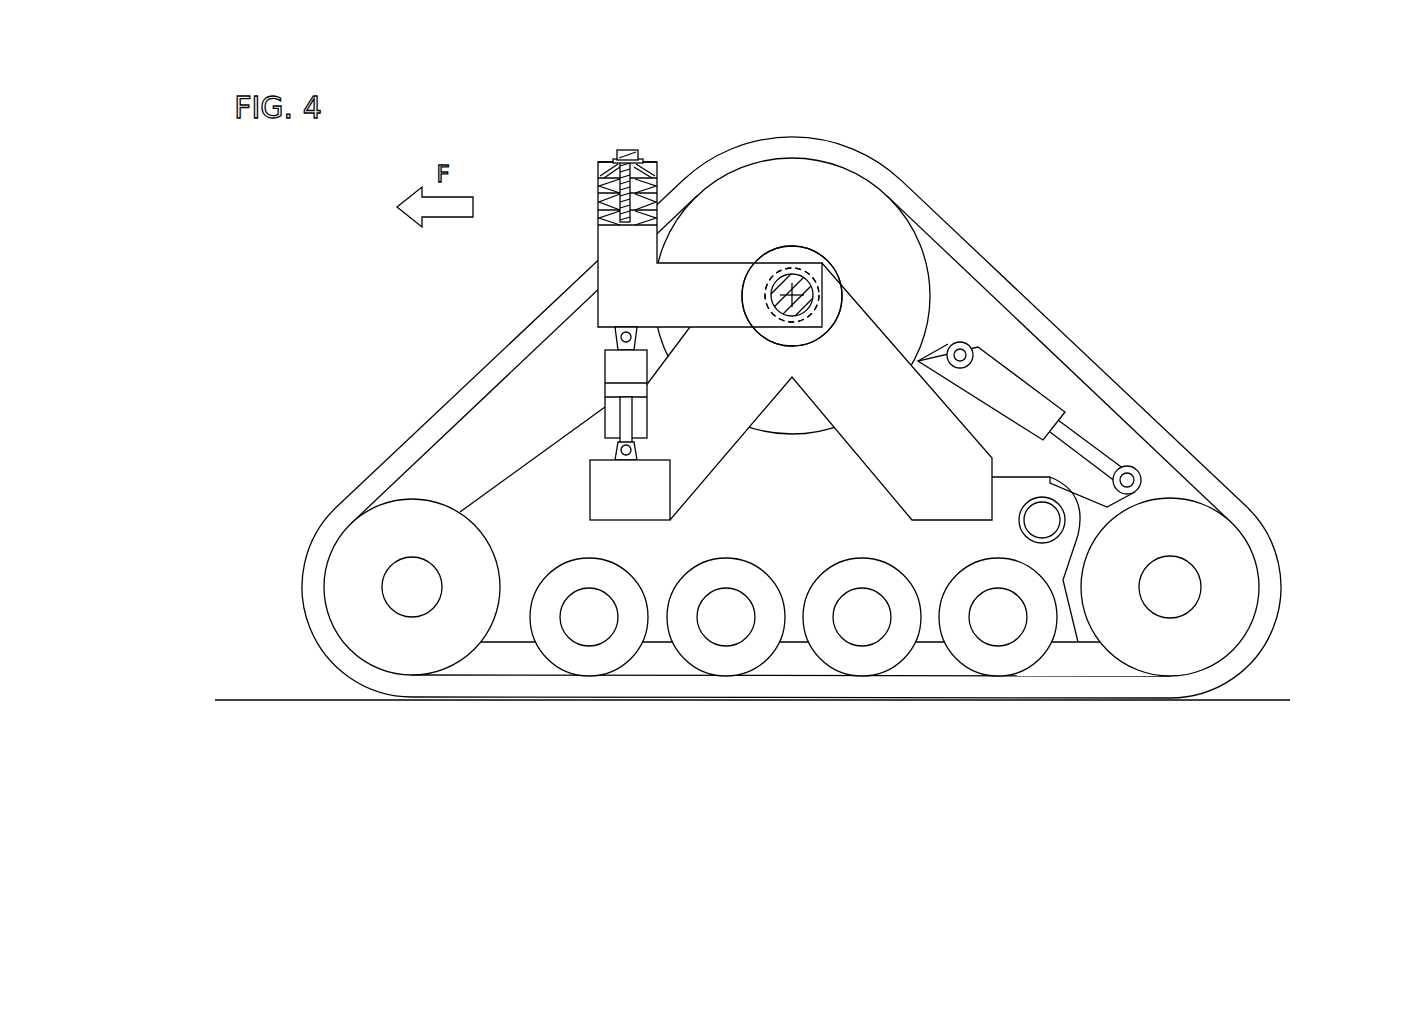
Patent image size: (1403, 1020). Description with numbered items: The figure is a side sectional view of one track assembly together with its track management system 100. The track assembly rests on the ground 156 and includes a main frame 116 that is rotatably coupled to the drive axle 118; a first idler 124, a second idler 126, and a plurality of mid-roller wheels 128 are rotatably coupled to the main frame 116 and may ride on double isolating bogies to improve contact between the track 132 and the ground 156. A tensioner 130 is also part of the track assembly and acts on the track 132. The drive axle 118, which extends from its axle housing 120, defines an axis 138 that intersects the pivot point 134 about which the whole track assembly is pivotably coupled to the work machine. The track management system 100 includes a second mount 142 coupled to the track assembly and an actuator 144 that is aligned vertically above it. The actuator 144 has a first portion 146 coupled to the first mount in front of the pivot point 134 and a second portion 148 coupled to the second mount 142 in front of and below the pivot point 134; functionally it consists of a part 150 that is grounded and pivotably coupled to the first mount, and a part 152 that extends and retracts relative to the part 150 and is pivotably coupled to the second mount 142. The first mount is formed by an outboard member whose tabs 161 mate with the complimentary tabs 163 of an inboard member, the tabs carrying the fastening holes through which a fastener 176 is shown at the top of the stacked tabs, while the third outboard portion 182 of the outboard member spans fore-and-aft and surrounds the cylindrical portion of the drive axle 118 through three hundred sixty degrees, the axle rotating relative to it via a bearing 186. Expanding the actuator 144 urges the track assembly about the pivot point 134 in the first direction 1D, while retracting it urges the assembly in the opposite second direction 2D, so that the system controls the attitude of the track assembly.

The track management system 100 is at (520, 113).
The adjustment screw 176 is at (628, 150).
The tabs 161 is at (658, 200).
The complimentary tabs 163 is at (598, 210).
The actuator 144 is at (625, 394).
The axle housing 120 is at (800, 201).
The third outboard portion 182 is at (751, 267).
The bearing 186 is at (765, 292).
The drive axle 118 is at (777, 322).
The pivot point 134 is at (835, 329).
The axis 138 is at (795, 298).
The tensioner 130 is at (1025, 375).
The main frame 116 is at (1112, 465).
The track 132 is at (1185, 448).
The second mount 142 is at (576, 498).
The second portion 148 is at (546, 392).
The part that extends and retracts 152 is at (605, 420).
The first portion 146 is at (717, 450).
The part that is grounded 150 is at (646, 425).
The second idler 126 is at (390, 653).
The mid-roller wheels 128 is at (568, 588).
The first idler 124 is at (1150, 653).
The ground 156 is at (292, 700).
The first direction 1D is at (708, 250).
The second direction 2D is at (885, 300).